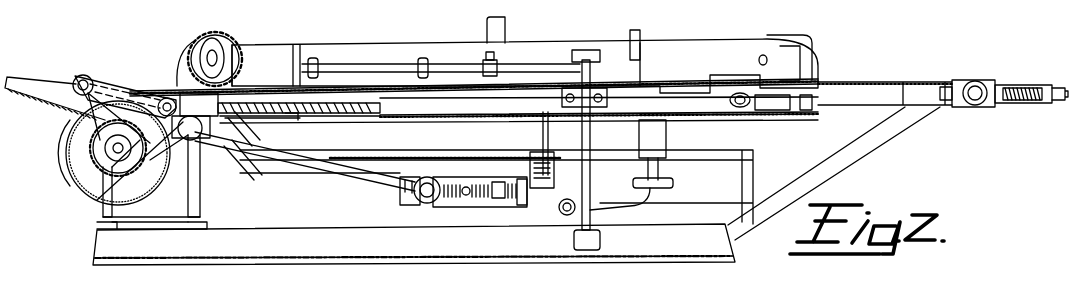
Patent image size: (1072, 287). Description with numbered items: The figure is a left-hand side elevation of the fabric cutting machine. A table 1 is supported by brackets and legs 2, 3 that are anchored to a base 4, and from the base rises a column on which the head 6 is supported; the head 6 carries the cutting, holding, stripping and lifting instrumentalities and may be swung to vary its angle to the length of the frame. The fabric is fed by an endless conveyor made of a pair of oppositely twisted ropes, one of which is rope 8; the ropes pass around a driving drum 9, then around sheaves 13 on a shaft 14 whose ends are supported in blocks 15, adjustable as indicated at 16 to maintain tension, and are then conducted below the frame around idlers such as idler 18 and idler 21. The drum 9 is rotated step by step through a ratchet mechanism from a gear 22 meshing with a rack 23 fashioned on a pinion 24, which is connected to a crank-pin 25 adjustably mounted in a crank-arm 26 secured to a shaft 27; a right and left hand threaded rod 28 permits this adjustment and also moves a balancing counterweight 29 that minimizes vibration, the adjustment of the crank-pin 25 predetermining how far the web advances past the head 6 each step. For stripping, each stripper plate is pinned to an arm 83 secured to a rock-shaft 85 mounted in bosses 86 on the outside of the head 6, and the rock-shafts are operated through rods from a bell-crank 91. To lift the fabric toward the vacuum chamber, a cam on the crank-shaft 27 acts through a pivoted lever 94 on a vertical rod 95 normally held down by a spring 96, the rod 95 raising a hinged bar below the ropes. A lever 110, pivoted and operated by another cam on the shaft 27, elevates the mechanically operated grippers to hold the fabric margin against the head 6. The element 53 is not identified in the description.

The table 1 is at (860, 90).
The leg 2 is at (192, 205).
The leg 3 is at (867, 144).
The base 4 is at (265, 232).
The head 6 is at (708, 43).
The rope 8 is at (64, 138).
The driving drum 9 is at (70, 156).
The sheave 13 is at (971, 86).
The shaft 14 is at (977, 107).
The block 15 is at (997, 86).
The adjustment 16 is at (1025, 103).
The idler 18 is at (290, 121).
The idler 21 is at (190, 116).
The gear 22 is at (98, 167).
The rack 23 is at (42, 105).
The pinion 24 is at (368, 170).
The crank-pin 25 is at (420, 191).
The crank-arm 26 is at (471, 200).
The shaft 27 is at (462, 195).
The right and left hand threaded rod 28 is at (486, 195).
The balancing counterweight 29 is at (506, 203).
The knob 53 is at (487, 30).
The arm 83 is at (318, 70).
The rock-shaft 85 is at (378, 68).
The boss 86 is at (497, 66).
The bell-crank 91 is at (910, 280).
The pivoted lever 94 is at (544, 204).
The vertical rod 95 is at (543, 135).
The spring 96 is at (557, 160).
The lever 110 is at (652, 204).